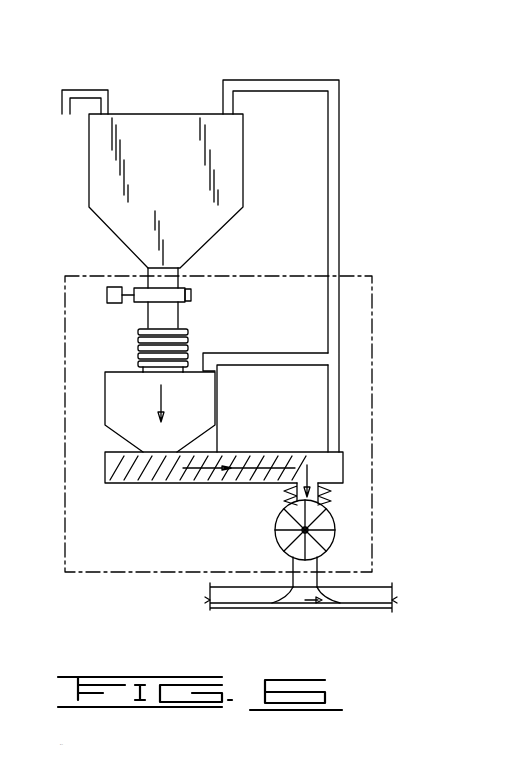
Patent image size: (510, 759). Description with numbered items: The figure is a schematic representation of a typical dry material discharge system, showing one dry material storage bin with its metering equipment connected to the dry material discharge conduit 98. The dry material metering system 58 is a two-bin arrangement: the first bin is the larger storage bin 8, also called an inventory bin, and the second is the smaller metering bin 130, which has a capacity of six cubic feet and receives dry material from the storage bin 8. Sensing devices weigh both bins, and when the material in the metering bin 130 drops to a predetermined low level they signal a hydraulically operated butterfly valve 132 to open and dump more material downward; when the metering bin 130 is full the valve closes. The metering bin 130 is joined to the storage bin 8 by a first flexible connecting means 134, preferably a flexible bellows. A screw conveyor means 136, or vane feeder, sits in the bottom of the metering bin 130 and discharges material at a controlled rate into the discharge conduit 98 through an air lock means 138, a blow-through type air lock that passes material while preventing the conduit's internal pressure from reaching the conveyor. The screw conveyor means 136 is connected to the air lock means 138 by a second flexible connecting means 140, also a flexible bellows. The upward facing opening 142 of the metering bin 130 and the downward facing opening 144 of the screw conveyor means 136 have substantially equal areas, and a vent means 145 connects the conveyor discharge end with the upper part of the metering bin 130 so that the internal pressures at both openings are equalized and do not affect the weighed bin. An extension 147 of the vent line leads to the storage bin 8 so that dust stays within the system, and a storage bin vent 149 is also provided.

The storage bin 8 is at (178, 151).
The dry material metering system 58 is at (286, 276).
The dry material discharge conduit 98 is at (362, 600).
The metering bin 130 is at (205, 417).
The butterfly valve 132 is at (192, 294).
The first flexible connecting means 134 is at (138, 342).
The screw conveyor means 136 is at (253, 452).
The air lock means 138 is at (334, 526).
The second flexible connecting means 140 is at (323, 490).
The upward facing opening 142 is at (140, 373).
The downward facing opening 144 is at (291, 492).
The vent means 145 is at (290, 333).
The extension of vent line 147 is at (270, 85).
The storage bin vent 149 is at (80, 88).